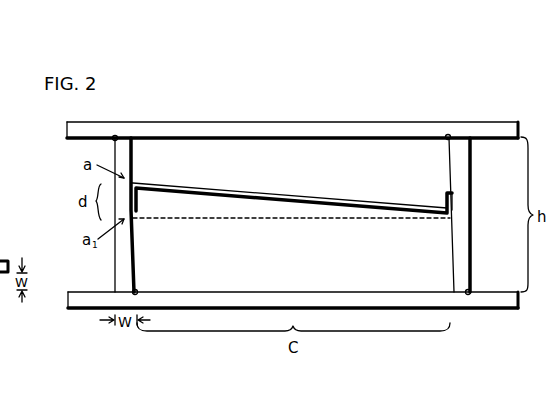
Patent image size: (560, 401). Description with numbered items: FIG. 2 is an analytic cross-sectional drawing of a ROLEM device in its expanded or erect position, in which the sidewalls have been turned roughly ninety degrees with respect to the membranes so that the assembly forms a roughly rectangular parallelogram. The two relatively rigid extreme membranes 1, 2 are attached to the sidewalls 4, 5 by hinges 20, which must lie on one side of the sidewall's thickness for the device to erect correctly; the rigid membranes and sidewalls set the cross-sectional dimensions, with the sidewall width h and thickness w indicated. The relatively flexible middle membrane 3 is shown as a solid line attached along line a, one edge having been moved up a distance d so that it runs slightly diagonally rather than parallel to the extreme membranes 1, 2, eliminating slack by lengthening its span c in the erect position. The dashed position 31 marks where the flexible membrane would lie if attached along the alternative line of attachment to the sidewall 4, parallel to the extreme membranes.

The extreme membrane 1 is at (287, 130).
The extreme membrane 2 is at (497, 299).
The middle membrane 3 is at (275, 199).
The flexible membrane line of attachment position 31 is at (283, 221).
The sidewall 4 is at (124, 263).
The sidewall 5 is at (471, 258).
The hinges 20 is at (117, 136).